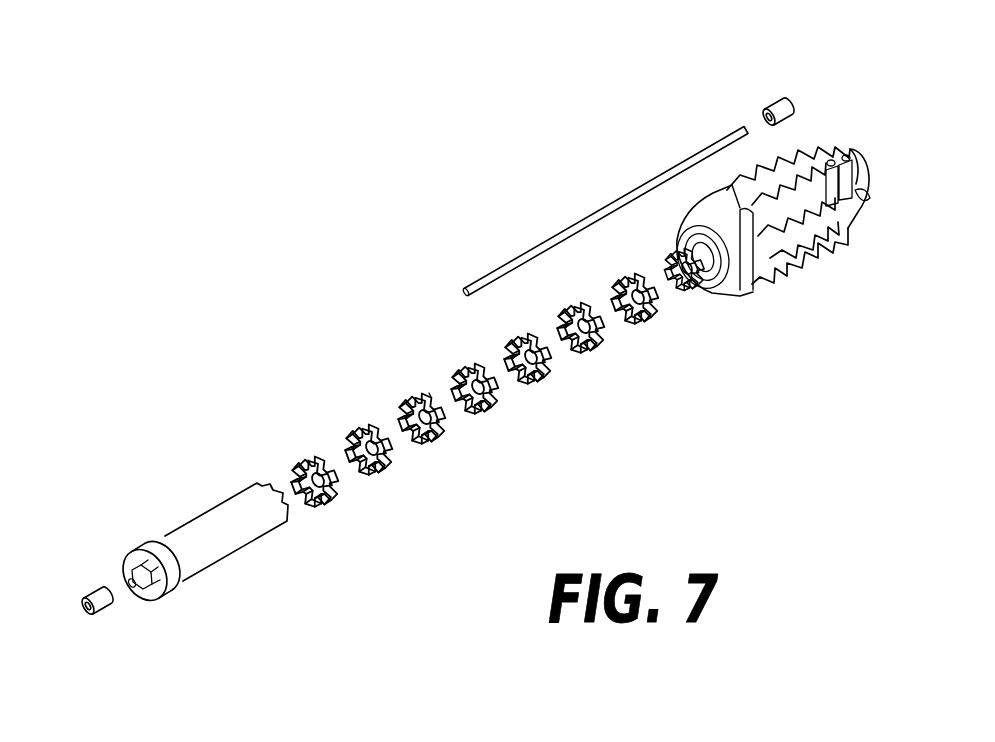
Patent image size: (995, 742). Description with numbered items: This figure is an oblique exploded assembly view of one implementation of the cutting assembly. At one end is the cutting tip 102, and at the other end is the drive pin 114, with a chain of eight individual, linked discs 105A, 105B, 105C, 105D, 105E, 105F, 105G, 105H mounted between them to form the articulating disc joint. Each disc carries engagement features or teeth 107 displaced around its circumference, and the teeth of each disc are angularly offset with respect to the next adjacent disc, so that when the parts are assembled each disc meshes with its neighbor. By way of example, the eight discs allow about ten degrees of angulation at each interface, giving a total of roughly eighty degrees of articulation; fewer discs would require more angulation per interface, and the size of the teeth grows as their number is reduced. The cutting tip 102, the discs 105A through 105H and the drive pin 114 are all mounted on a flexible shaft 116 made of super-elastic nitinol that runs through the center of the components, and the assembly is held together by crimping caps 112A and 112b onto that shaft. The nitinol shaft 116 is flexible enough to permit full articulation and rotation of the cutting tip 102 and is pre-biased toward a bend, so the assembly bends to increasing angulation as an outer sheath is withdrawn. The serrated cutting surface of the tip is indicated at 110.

The cutting tip 102 is at (846, 140).
The disc 105A is at (318, 495).
The disc 105B is at (385, 471).
The disc 105C is at (449, 456).
The disc 105D is at (497, 409).
The disc 105E is at (555, 373).
The disc 105F is at (610, 340).
The disc 105G is at (662, 317).
The disc 105H is at (744, 288).
The engagement features (teeth) 107 is at (308, 460).
The serrated blade 110 is at (799, 284).
The crimping cap 112A is at (104, 628).
The crimping cap 112b is at (797, 97).
The drive pin 114 is at (219, 582).
The flexible shaft 116 is at (546, 222).